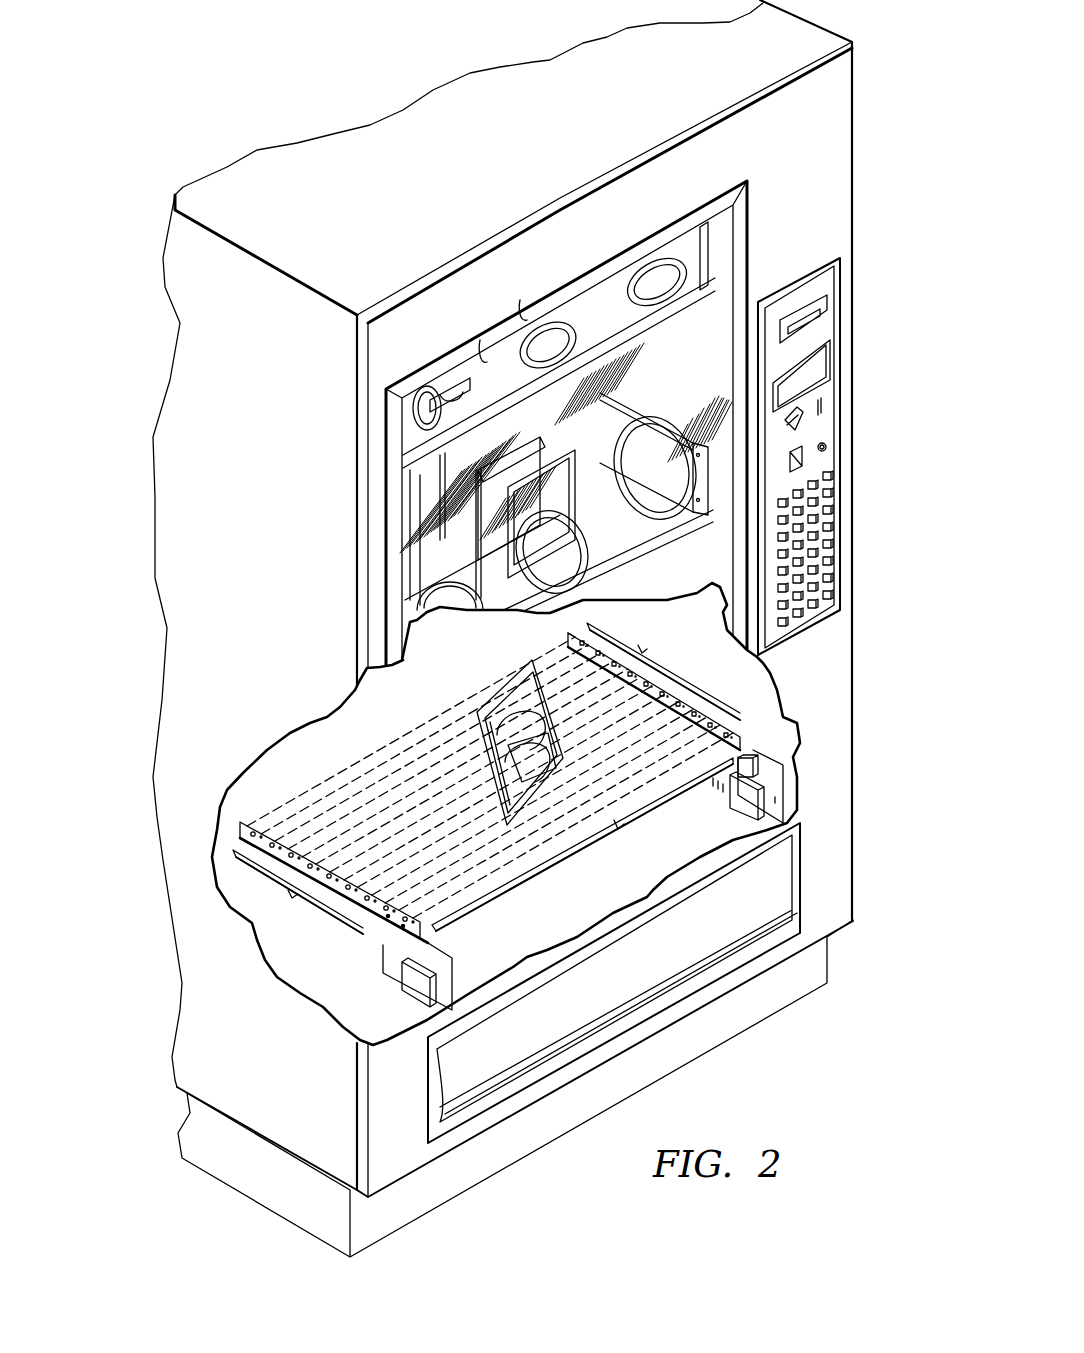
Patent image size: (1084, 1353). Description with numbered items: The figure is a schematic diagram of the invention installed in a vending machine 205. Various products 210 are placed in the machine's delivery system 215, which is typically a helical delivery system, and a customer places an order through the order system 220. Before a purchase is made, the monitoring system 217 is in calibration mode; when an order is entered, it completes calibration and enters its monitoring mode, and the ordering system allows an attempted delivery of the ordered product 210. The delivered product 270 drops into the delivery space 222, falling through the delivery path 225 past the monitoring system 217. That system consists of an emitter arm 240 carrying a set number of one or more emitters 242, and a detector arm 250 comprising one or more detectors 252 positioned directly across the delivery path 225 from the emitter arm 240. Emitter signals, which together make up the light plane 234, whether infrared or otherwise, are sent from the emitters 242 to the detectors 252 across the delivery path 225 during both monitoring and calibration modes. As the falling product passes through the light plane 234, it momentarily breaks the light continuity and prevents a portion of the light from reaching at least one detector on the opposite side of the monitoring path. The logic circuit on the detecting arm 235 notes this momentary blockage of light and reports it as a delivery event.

The vending machine 205 is at (327, 152).
The products 210 is at (673, 270).
The delivery system 215 is at (637, 303).
The order system 220 is at (830, 455).
The delivery space 222 is at (369, 718).
The delivery path 225 is at (582, 844).
The light plane 234 is at (326, 790).
The detecting arm 235 is at (746, 757).
The emitter arm 240 is at (458, 978).
The emitters 242 is at (403, 929).
The detector arm 250 is at (768, 772).
The detectors 252 is at (566, 655).
The product 270 is at (494, 694).
The monitoring system 217 is at (486, 781).